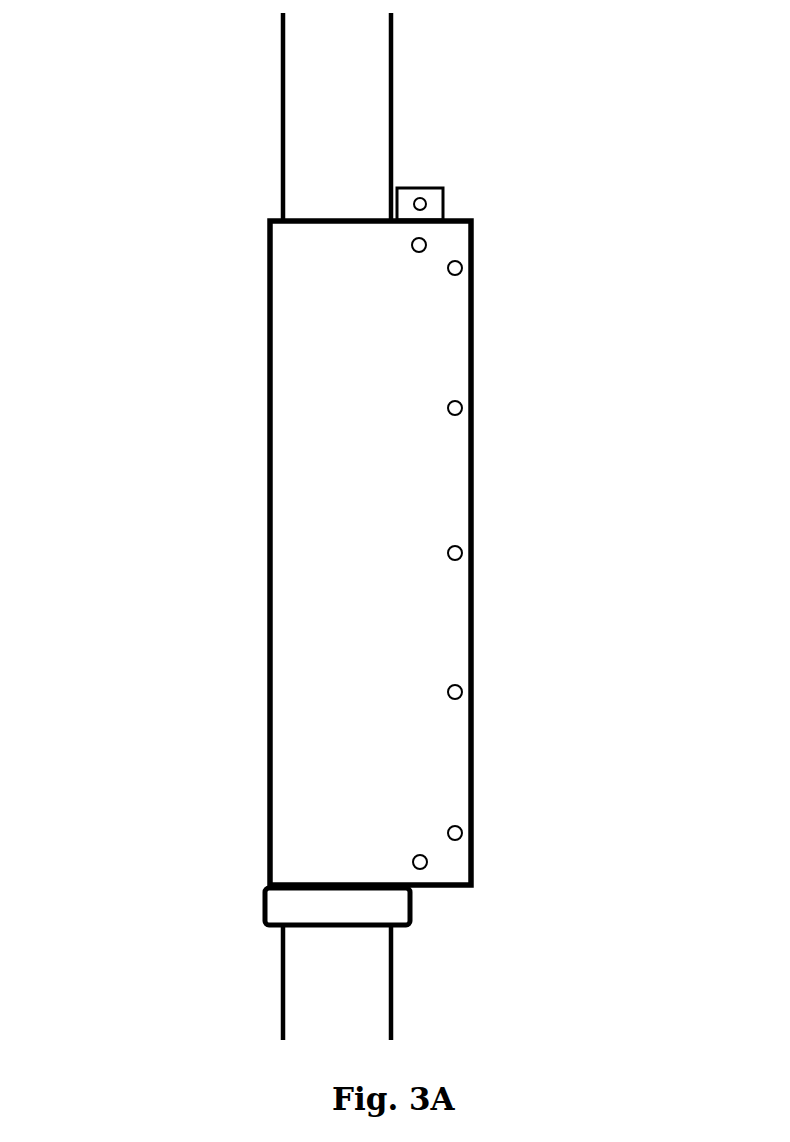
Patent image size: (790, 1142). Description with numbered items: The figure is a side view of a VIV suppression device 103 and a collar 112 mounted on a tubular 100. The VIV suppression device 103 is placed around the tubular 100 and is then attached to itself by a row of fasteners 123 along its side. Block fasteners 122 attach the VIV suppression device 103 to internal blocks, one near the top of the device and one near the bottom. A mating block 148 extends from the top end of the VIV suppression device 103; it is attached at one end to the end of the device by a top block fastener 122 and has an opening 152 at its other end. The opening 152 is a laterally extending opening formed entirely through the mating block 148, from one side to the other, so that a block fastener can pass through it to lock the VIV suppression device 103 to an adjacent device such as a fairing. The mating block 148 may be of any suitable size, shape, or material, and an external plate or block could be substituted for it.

The tubular 100 is at (266, 135).
The VIV suppression device 103 is at (255, 529).
The collar 112 is at (249, 902).
The block fastener 122 is at (443, 240).
The fastener 123 is at (472, 813).
The mating block 148 is at (454, 176).
The opening 152 is at (441, 199).